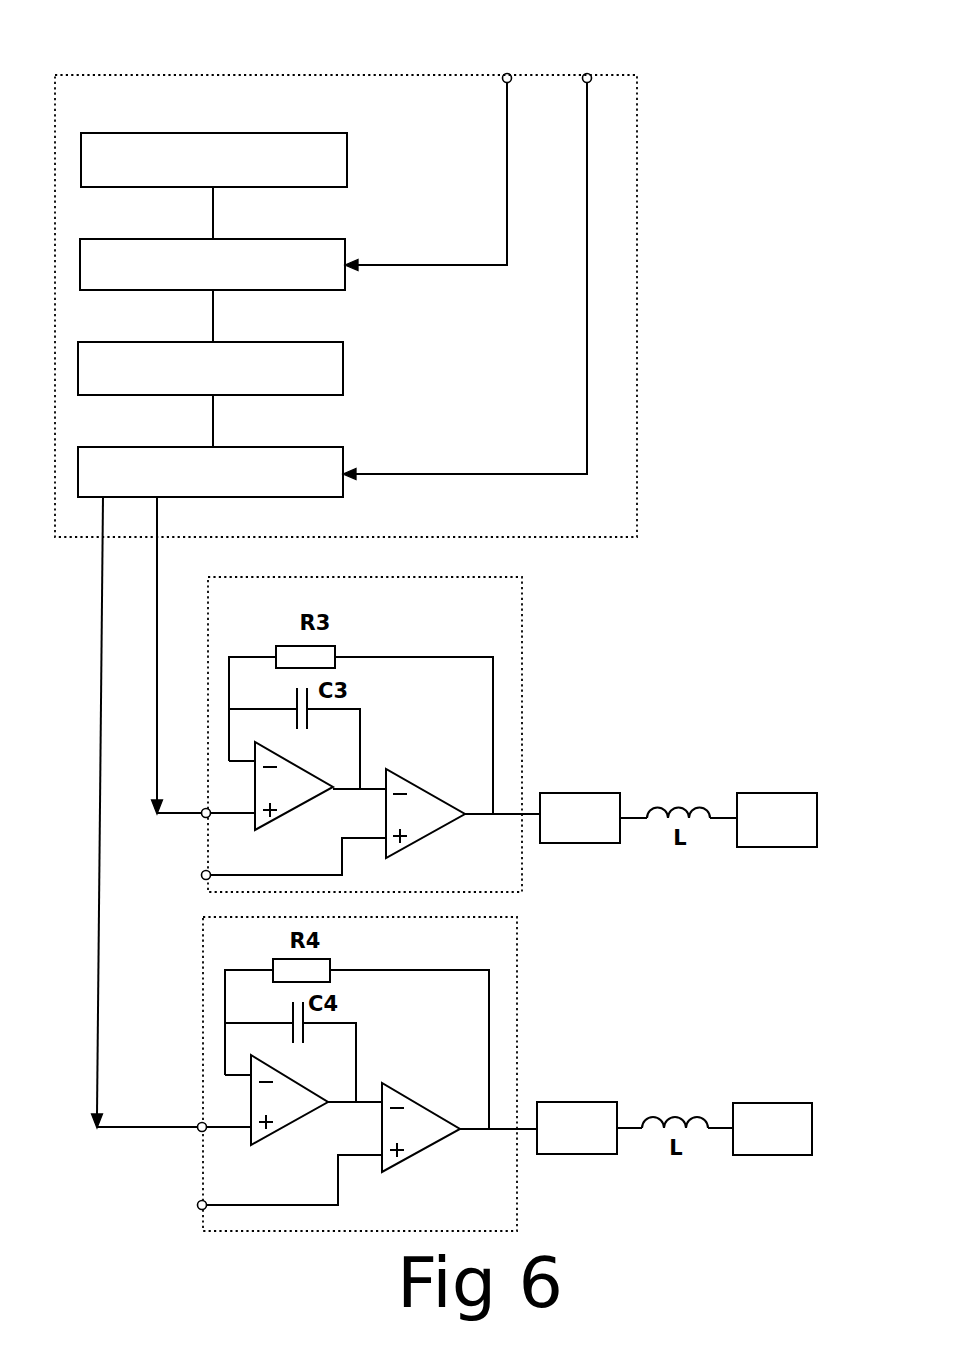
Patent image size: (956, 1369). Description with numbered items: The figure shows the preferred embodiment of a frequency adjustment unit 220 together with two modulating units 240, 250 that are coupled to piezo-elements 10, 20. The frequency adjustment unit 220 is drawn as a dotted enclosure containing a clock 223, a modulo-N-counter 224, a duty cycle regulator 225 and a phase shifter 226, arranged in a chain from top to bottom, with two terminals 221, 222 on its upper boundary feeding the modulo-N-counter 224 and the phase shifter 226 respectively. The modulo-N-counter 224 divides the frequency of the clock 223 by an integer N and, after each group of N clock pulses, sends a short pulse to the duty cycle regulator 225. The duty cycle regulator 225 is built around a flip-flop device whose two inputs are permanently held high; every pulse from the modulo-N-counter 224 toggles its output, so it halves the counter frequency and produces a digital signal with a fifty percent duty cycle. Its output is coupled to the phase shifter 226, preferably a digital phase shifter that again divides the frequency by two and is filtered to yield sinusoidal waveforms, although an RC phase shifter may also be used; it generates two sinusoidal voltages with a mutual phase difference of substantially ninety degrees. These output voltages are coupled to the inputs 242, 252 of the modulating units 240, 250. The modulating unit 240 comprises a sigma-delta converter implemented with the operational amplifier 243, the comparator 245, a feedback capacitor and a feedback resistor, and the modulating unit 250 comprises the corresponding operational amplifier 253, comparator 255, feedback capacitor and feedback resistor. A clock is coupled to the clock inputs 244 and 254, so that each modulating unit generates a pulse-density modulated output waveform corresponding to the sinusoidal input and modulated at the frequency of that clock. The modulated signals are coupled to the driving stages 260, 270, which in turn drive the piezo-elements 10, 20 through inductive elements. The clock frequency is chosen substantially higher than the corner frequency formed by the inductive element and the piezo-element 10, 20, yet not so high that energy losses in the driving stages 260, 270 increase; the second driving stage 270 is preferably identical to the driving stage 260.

The frequency adjustment unit 220 is at (637, 330).
The first control input 221 is at (509, 73).
The second control input 222 is at (589, 73).
The clock 223 is at (347, 156).
The modulo-N-counter 224 is at (345, 286).
The duty cycle regulator 225 is at (343, 364).
The phase shifter 226 is at (343, 490).
The modulating unit 240 is at (522, 612).
The input 242 is at (202, 810).
The operational amplifier 243 is at (285, 815).
The clock input 244 is at (203, 881).
The comparator 245 is at (413, 781).
The modulating unit 250 is at (517, 968).
The input 252 is at (199, 1125).
The operational amplifier 253 is at (262, 1140).
The clock input 254 is at (199, 1200).
The comparator 255 is at (410, 1098).
The driving stage 260 is at (577, 845).
The driving stage 270 is at (570, 1156).
The piezo-element 10 is at (770, 848).
The piezo-element 20 is at (768, 1157).